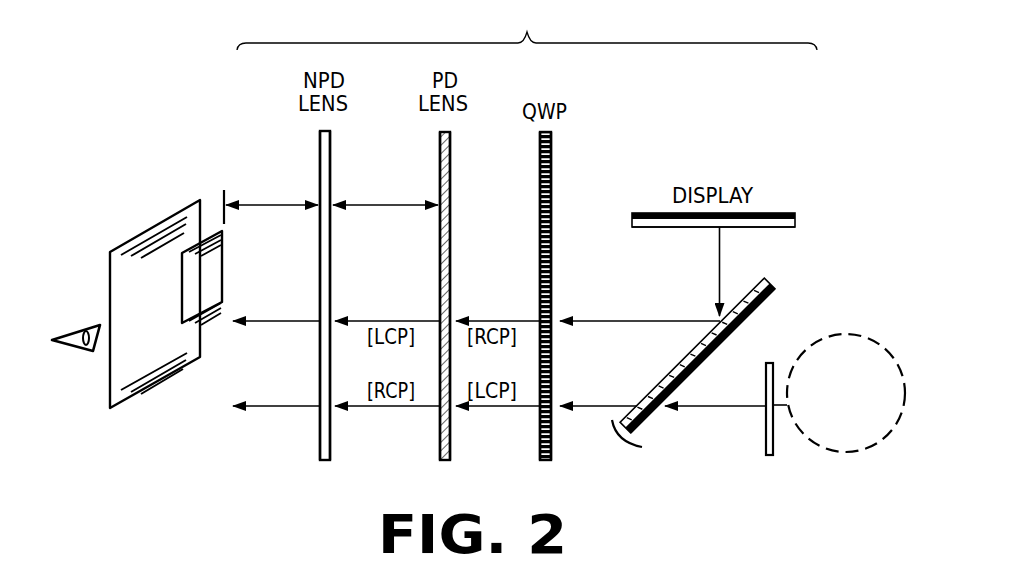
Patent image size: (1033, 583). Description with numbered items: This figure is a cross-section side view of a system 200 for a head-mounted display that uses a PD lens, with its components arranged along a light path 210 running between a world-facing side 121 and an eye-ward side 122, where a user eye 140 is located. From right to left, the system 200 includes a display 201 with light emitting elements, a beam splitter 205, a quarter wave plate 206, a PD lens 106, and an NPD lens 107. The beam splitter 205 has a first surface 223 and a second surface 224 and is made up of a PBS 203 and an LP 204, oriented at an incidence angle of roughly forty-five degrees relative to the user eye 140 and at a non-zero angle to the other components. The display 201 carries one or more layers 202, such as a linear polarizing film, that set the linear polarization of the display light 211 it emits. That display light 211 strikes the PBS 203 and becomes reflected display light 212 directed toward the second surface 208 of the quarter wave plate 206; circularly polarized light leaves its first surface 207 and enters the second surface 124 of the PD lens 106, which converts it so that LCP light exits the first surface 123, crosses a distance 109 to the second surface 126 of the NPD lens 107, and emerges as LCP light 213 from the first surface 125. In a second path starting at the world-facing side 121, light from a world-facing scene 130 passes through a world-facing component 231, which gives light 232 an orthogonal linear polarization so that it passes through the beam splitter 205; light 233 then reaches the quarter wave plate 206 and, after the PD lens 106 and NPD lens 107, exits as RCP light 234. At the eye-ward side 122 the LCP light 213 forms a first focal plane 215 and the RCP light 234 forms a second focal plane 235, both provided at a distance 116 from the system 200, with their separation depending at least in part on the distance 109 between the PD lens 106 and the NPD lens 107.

The system 200 is at (243, 153).
The light path 210 is at (527, 26).
The NPD lens 107 is at (331, 136).
The first surface 125 is at (318, 191).
The second surface 126 is at (332, 191).
The PD lens 106 is at (451, 136).
The first surface 123 is at (438, 191).
The second surface 124 is at (452, 191).
The quarter wave plate 206 is at (552, 136).
The first surface 207 is at (538, 191).
The second surface 208 is at (552, 191).
The distance 116 is at (288, 207).
The distance 109 is at (405, 207).
The display 201 is at (795, 217).
The layers 202 is at (632, 221).
The display light 211 is at (718, 238).
The PBS 203 is at (771, 277).
The LP 204 is at (758, 305).
The first surface 223 is at (751, 274).
The second surface 224 is at (733, 347).
The beam splitter 205 is at (622, 441).
The reflected display light 212 is at (575, 327).
The LCP light 213 is at (243, 327).
The light 232 is at (756, 405).
The light 233 is at (573, 412).
The light 234 is at (243, 410).
The world-facing component 231 is at (777, 452).
The world-facing scene 130 is at (860, 417).
The world-facing side 121 is at (847, 360).
The eye-ward side 122 is at (87, 308).
The user eye 140 is at (70, 347).
The first focal plane 215 is at (181, 268).
The second focal plane 235 is at (160, 380).